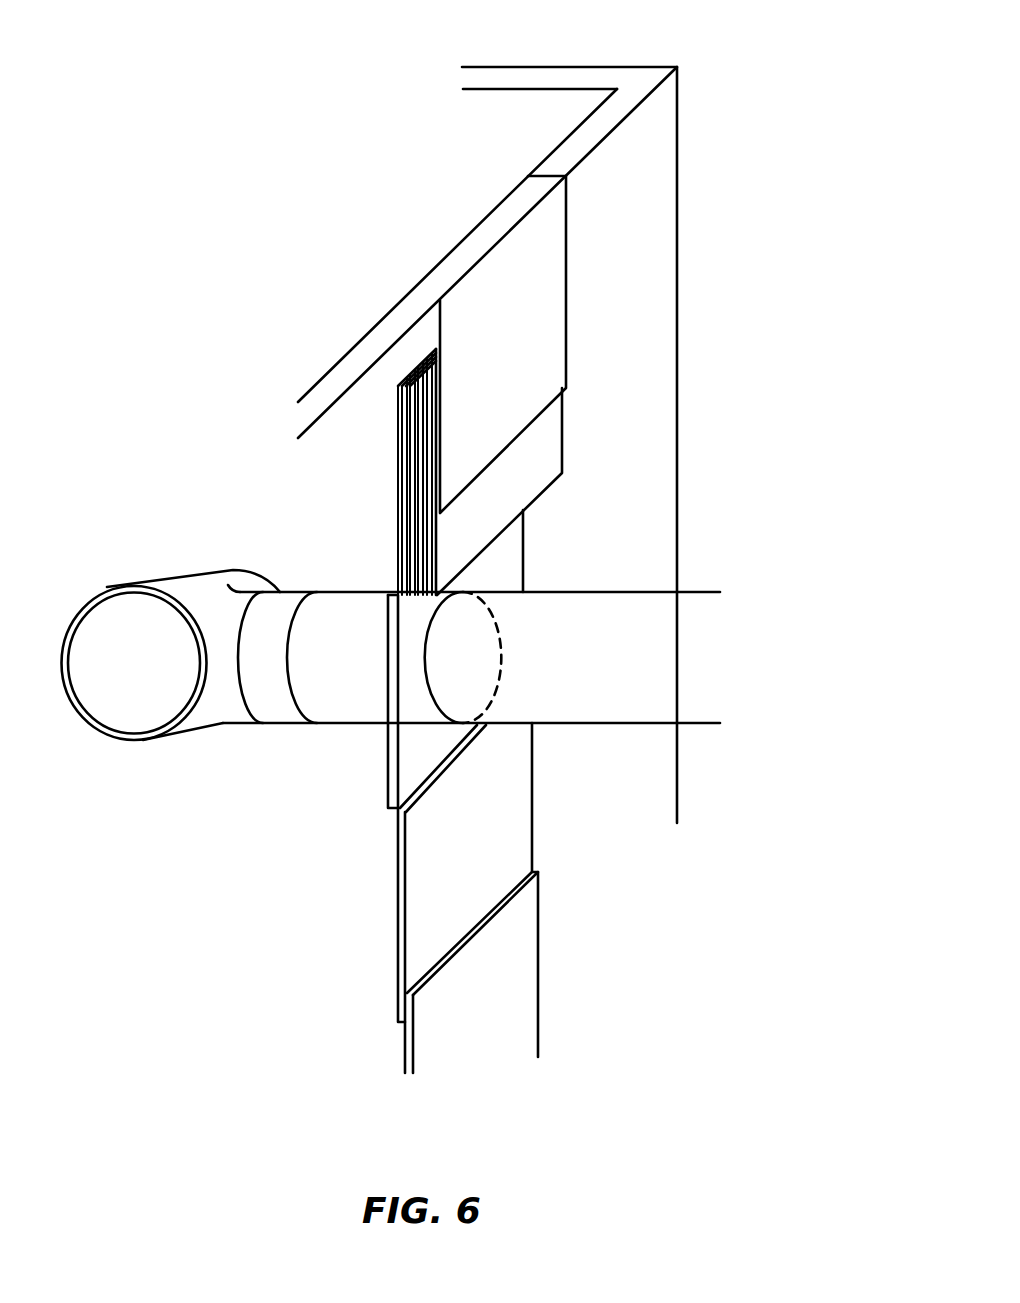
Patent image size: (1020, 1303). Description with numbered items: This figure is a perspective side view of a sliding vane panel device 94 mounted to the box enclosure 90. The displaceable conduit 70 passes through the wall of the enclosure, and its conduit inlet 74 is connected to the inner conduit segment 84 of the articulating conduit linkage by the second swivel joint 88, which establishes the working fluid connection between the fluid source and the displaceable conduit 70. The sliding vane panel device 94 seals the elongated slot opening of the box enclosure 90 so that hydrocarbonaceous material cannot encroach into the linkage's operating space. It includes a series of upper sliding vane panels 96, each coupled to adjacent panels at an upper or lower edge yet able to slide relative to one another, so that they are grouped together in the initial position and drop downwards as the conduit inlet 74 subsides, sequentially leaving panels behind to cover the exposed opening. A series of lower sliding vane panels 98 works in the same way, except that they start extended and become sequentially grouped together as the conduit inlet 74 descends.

The displaceable conduit 70 is at (705, 592).
The conduit inlet 74 is at (343, 682).
The inner conduit segment 84 is at (167, 590).
The second swivel joint 88 is at (257, 675).
The box enclosure 90 is at (677, 257).
The sliding vane panel device 94 is at (725, 350).
The upper sliding vane panels 96 is at (517, 393).
The lower sliding vane panels 98 is at (487, 863).